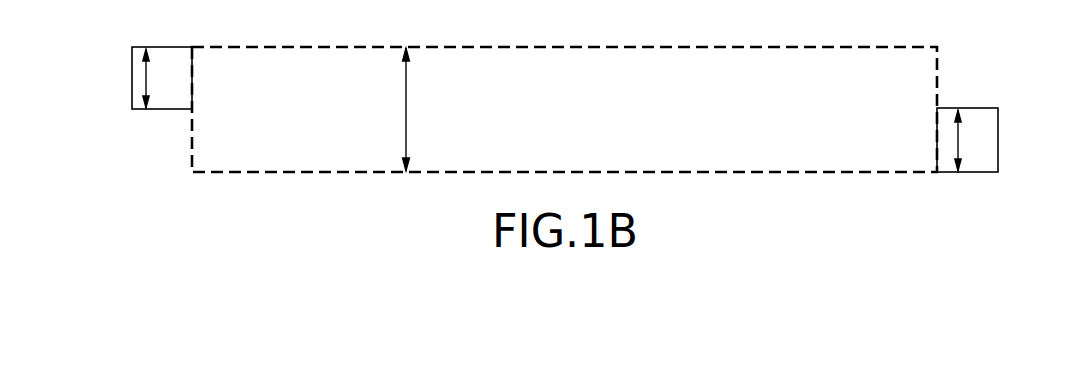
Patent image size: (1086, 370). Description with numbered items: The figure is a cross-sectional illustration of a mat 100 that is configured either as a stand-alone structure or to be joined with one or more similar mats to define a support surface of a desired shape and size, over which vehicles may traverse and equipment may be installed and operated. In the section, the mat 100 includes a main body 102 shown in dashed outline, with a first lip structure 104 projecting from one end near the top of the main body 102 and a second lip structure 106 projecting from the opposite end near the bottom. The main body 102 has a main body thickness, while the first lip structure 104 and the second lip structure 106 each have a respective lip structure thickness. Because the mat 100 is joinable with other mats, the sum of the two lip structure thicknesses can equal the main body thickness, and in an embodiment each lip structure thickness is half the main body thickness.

The mat 100 is at (579, 109).
The main body 102 is at (677, 151).
The first lip structure 104 is at (139, 109).
The second lip structure 106 is at (982, 172).